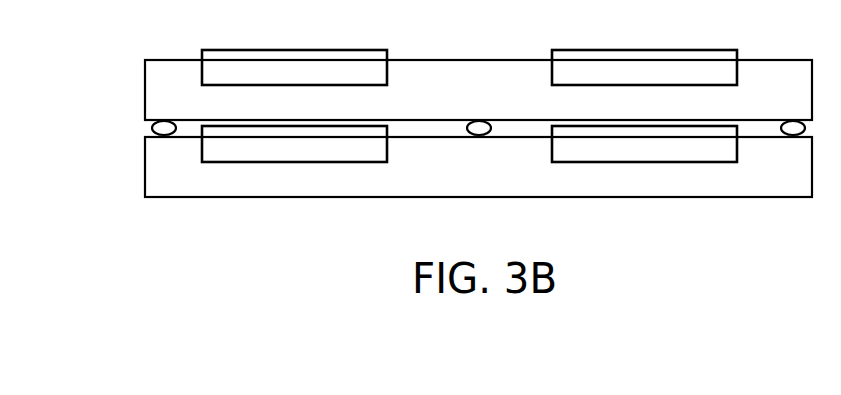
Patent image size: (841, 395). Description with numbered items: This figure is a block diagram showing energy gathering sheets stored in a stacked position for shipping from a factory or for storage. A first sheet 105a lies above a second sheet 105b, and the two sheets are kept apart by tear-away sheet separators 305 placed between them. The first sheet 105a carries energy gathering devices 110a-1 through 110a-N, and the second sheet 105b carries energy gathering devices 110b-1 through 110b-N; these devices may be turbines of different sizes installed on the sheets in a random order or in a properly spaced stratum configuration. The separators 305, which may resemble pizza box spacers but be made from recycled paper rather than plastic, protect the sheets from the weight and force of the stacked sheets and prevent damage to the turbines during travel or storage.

The first sheet 105a is at (145, 93).
The second sheet 105b is at (145, 167).
The tear-away sheet separators 305 is at (152, 128).
The energy gathering device 110a-1 is at (333, 78).
The energy gathering device 110a-N is at (687, 78).
The energy gathering device 110b-1 is at (333, 156).
The energy gathering device 110b-N is at (687, 156).